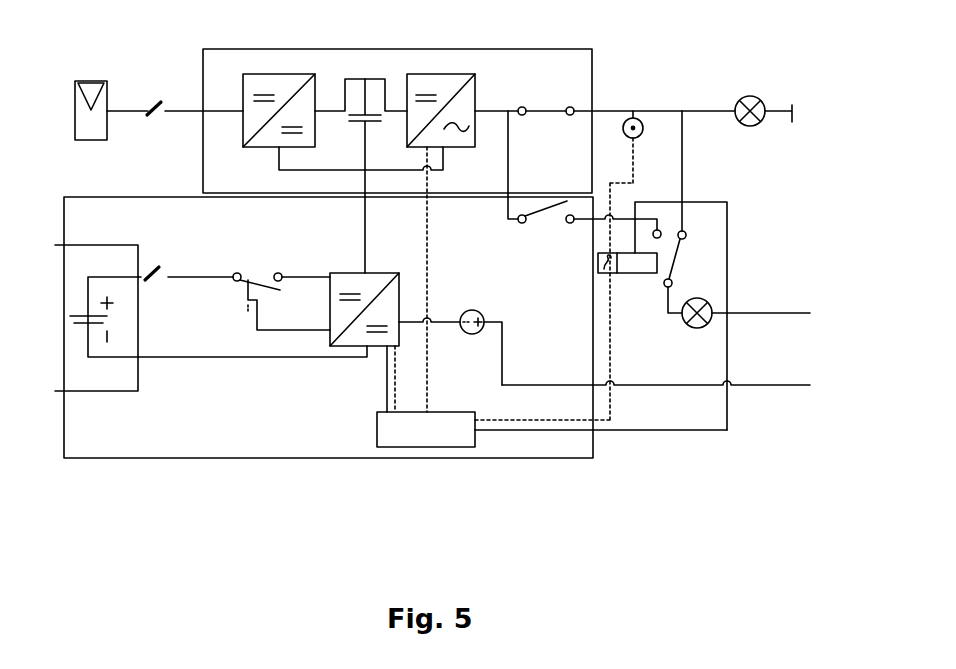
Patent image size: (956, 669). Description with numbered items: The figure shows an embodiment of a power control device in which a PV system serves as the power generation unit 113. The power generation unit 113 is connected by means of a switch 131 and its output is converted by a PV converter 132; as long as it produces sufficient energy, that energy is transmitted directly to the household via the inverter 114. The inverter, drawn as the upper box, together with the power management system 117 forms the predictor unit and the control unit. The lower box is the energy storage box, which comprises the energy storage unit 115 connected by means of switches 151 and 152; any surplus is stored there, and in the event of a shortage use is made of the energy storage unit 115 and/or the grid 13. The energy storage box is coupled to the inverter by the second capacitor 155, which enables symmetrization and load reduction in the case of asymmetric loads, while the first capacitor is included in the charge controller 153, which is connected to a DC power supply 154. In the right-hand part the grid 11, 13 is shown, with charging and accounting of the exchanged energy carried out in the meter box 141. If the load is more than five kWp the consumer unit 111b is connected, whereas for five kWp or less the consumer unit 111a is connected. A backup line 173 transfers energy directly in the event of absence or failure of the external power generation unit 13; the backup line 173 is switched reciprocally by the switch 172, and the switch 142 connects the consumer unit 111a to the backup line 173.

The power generation unit 113 is at (91, 80).
The switch 131 is at (162, 103).
The PV converter 132 is at (287, 74).
The second capacitor 155 is at (371, 112).
The inverter 114 is at (467, 74).
The switch 172 is at (540, 111).
The meter box 141 is at (648, 133).
The consumer unit 111b is at (755, 78).
The grid 11 is at (755, 78).
The grid 13 is at (752, 95).
The backup line 173 is at (600, 222).
The switch 142 is at (683, 262).
The consumer unit 111a is at (703, 300).
The energy storage unit 115 is at (76, 393).
The switch 151 is at (155, 265).
The switch 152 is at (262, 280).
The charge controller 153 is at (383, 352).
The DC power supply 154 is at (477, 335).
The power management system 117 is at (443, 447).